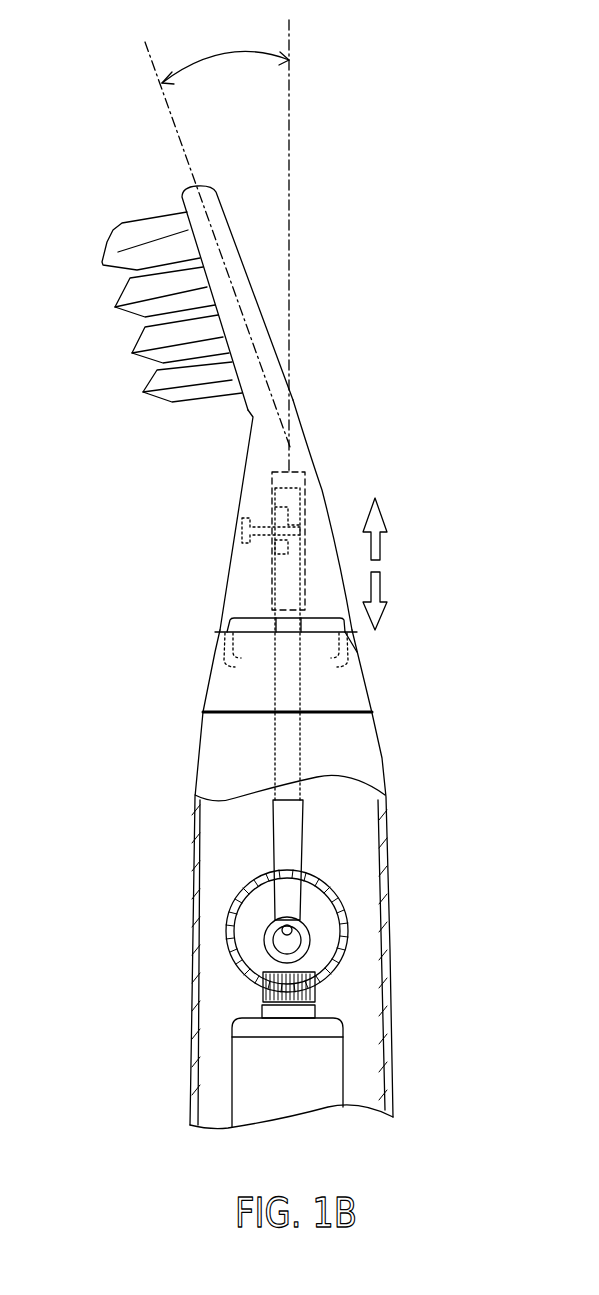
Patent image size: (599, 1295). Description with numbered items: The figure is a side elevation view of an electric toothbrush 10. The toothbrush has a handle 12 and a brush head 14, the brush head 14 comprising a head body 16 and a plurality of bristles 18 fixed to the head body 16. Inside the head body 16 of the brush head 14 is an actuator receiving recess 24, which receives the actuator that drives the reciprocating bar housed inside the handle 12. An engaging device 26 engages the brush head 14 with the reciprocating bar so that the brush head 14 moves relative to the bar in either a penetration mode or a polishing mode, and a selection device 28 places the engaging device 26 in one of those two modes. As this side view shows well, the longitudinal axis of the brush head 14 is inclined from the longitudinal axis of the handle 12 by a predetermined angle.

The electric toothbrush 10 is at (367, 205).
The handle 12 is at (382, 744).
The brush head 14 is at (282, 360).
The head body 16 is at (247, 415).
The bristles 18 is at (102, 263).
The actuator receiving recess 24 is at (305, 485).
The engaging device 26 is at (265, 550).
The selection device 28 is at (370, 680).